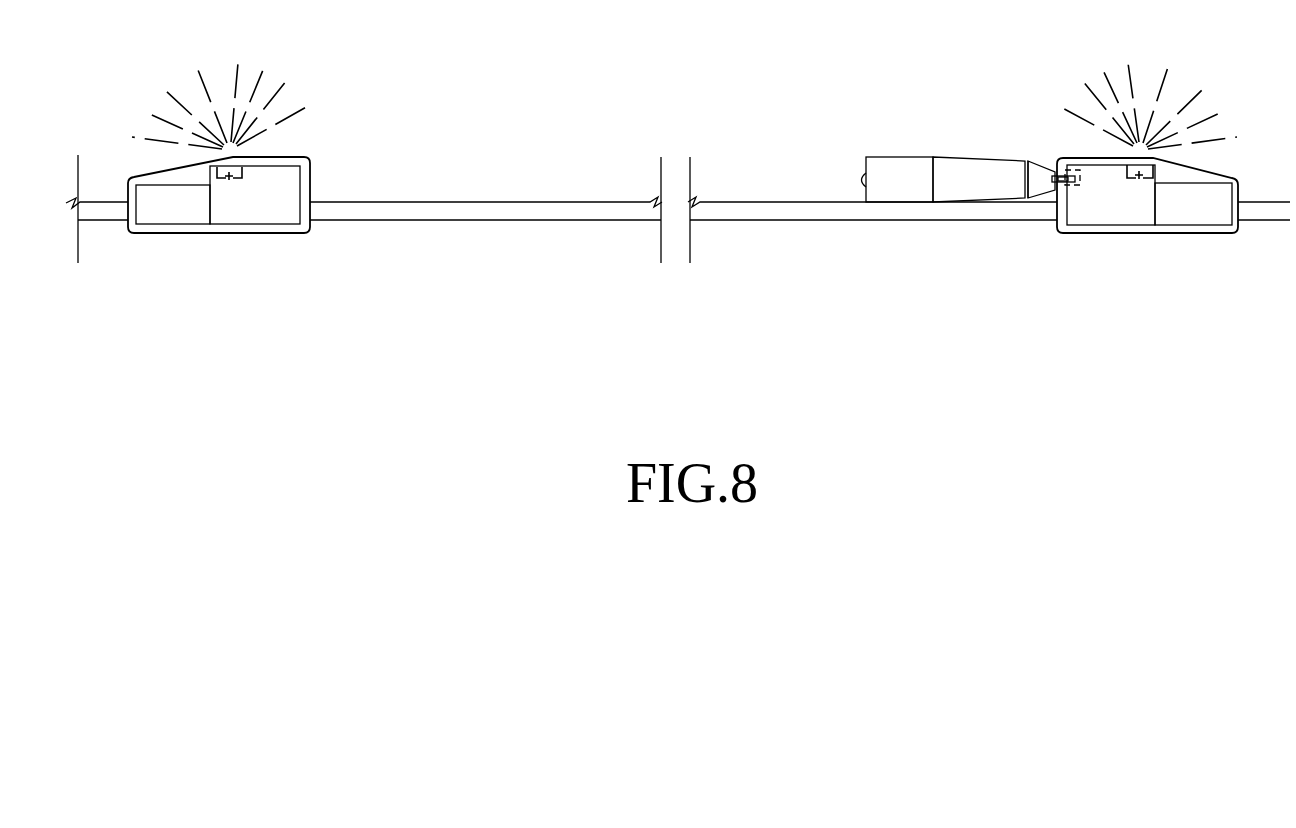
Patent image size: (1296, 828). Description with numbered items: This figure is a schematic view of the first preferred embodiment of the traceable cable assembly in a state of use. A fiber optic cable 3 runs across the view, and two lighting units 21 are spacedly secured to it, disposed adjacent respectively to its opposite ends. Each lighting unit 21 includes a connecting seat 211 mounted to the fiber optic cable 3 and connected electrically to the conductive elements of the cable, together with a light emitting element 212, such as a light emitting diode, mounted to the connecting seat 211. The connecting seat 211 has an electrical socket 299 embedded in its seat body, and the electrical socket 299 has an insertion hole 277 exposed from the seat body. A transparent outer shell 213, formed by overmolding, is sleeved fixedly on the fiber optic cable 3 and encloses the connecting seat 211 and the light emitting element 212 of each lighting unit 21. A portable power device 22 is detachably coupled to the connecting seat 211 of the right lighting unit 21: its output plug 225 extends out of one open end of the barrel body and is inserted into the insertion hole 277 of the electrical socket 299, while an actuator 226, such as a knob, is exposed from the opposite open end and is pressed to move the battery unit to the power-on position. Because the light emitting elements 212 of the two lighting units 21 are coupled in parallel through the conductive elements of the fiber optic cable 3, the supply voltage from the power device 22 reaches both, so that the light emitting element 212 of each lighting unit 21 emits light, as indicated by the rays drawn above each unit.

The fiber optic cable 3 is at (420, 188).
The lighting unit 21 is at (217, 252).
The portable power device 22 is at (908, 160).
The connecting seat 211 is at (1108, 225).
The light emitting element 212 is at (229, 181).
The transparent outer shell 213 is at (178, 227).
The output plug 225 is at (1061, 162).
The actuator 226 is at (860, 178).
The insertion hole 277 is at (1060, 190).
The electrical socket 299 is at (1083, 186).